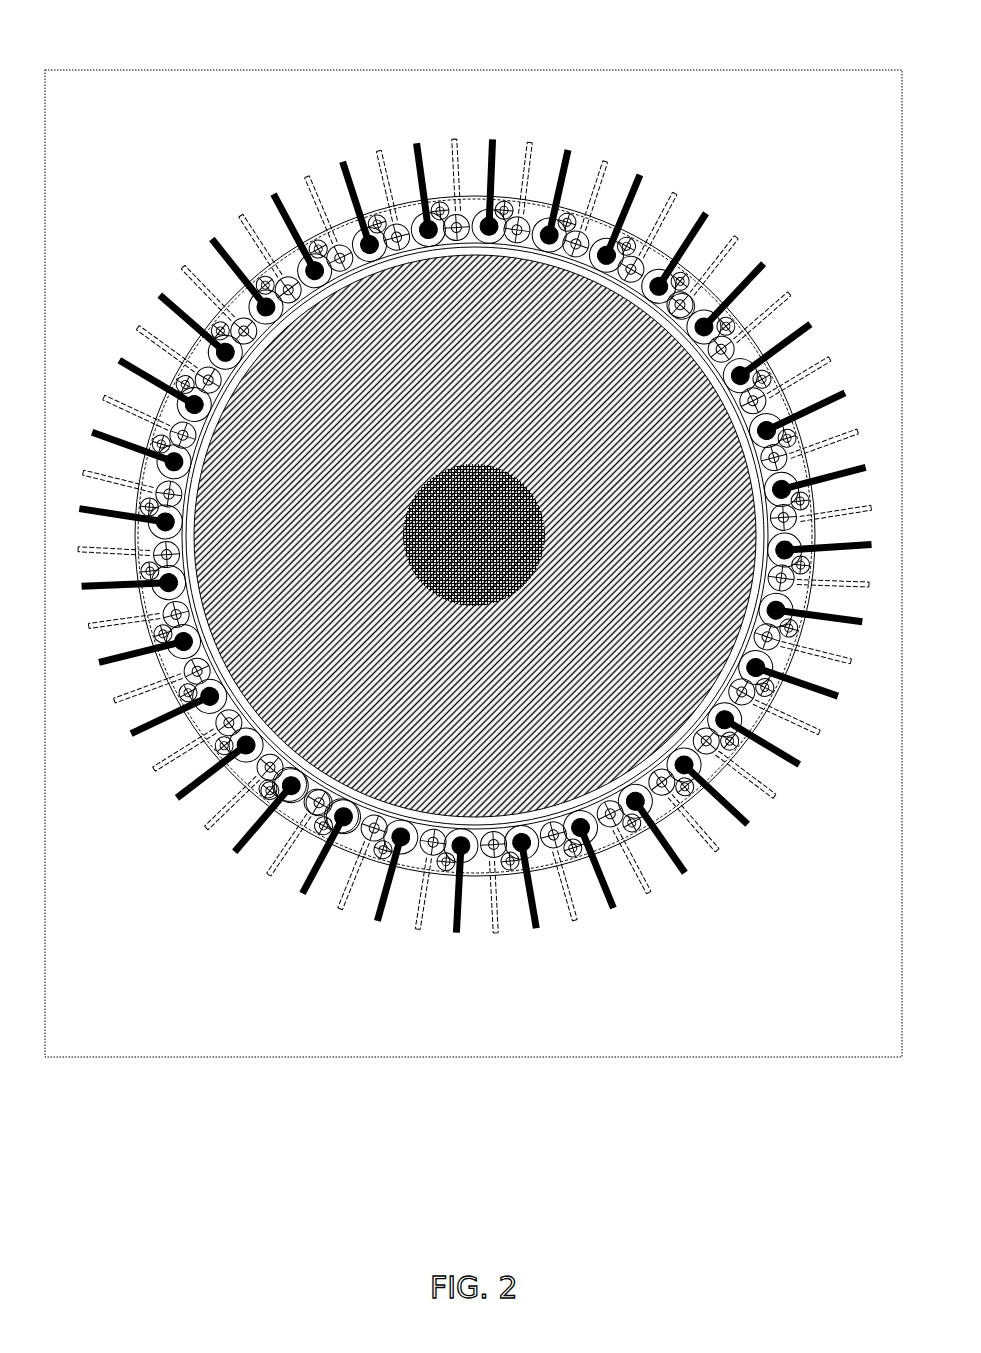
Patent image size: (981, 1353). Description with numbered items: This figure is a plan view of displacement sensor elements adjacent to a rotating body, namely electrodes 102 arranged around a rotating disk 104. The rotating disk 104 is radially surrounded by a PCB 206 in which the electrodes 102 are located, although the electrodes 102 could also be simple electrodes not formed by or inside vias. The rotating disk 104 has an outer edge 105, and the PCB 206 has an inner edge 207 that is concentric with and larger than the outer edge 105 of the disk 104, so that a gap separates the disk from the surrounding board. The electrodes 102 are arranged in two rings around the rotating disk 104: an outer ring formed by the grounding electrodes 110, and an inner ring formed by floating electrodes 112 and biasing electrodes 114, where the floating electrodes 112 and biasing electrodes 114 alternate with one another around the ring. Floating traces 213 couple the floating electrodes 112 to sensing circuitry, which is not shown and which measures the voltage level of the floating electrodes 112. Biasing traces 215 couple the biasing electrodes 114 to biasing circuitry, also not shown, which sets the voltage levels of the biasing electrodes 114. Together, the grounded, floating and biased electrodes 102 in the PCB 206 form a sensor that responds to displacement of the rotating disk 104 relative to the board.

The electrodes 102 is at (193, 357).
The rotating disk 104 is at (348, 325).
The outer edge 105 is at (397, 265).
The grounding electrodes 110 is at (267, 798).
The floating electrodes 112 is at (310, 807).
The biasing electrodes 114 is at (358, 858).
The PCB 206 is at (738, 113).
The inner edge 207 is at (663, 308).
The floating traces 213 is at (464, 880).
The biasing traces 215 is at (575, 927).